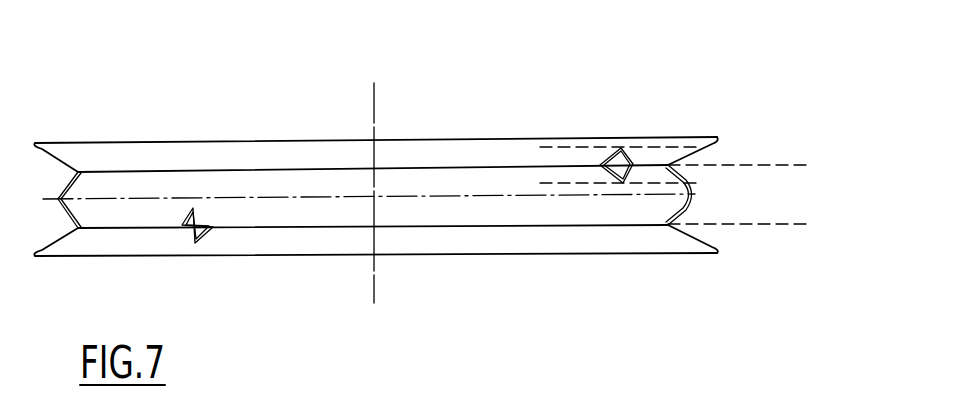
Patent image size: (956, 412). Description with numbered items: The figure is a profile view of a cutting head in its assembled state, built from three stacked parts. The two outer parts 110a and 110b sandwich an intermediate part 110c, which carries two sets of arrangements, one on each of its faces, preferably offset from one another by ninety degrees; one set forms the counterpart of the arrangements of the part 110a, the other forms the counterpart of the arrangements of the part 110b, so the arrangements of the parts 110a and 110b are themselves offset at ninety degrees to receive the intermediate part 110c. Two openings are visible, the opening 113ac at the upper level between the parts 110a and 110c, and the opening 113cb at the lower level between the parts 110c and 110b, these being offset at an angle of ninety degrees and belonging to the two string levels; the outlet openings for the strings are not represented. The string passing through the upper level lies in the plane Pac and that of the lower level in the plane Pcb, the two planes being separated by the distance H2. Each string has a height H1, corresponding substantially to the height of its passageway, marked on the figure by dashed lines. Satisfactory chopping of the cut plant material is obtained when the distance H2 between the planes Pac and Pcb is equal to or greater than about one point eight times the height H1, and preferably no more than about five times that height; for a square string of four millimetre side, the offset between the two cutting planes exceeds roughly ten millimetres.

The part 110a is at (463, 152).
The part 110b is at (455, 237).
The intermediate part 110c is at (308, 182).
The opening 113ac is at (636, 146).
The opening 113cb is at (209, 244).
The height of a string H1 is at (555, 203).
The distance between the planes of the string levels H2 is at (755, 167).
The plane of a string level Pac is at (792, 165).
The plane of a string level Pcb is at (793, 228).